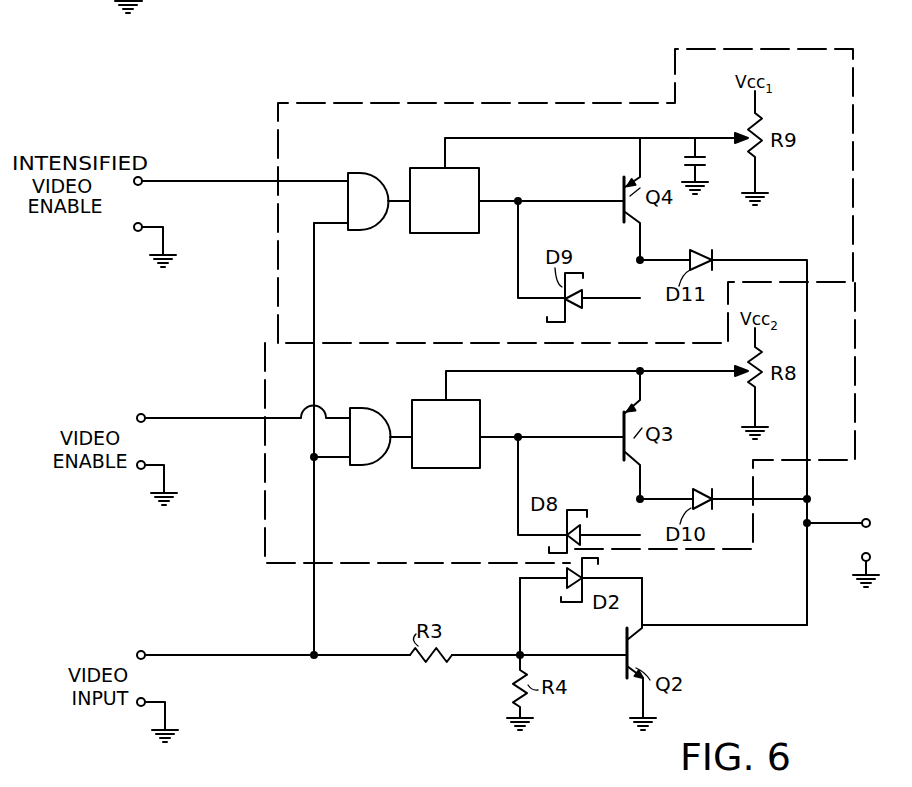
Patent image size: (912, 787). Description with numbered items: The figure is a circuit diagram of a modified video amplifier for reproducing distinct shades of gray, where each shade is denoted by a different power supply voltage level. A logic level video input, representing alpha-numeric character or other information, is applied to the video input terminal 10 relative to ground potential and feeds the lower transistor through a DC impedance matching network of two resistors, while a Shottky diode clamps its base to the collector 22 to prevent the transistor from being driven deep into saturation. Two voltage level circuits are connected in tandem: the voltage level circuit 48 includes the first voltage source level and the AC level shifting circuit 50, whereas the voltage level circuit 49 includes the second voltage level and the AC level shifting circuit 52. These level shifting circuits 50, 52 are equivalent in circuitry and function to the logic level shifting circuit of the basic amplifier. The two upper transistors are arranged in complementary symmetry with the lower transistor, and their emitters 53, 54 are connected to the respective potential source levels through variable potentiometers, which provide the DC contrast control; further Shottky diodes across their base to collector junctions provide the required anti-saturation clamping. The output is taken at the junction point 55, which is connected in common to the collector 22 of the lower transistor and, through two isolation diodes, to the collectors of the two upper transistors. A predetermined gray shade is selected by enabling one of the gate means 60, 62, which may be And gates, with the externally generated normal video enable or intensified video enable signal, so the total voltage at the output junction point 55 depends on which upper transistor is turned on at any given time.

The video input terminal 10 is at (183, 655).
The collector terminal 22 is at (655, 631).
The voltage level circuit 48 is at (758, 48).
The voltage level circuit 49 is at (855, 422).
The AC level shifting circuit 50 is at (420, 166).
The AC level shifting circuit 52 is at (428, 398).
The emitter 53 is at (640, 398).
The emitter 54 is at (640, 160).
The junction point 55 is at (808, 506).
The gate means 60 is at (356, 407).
The gate means 62 is at (355, 170).